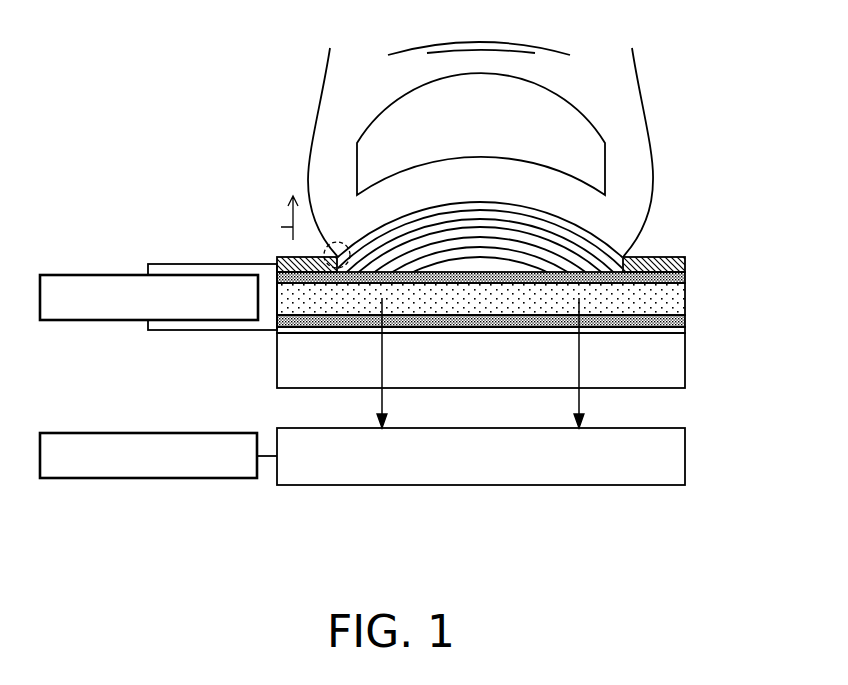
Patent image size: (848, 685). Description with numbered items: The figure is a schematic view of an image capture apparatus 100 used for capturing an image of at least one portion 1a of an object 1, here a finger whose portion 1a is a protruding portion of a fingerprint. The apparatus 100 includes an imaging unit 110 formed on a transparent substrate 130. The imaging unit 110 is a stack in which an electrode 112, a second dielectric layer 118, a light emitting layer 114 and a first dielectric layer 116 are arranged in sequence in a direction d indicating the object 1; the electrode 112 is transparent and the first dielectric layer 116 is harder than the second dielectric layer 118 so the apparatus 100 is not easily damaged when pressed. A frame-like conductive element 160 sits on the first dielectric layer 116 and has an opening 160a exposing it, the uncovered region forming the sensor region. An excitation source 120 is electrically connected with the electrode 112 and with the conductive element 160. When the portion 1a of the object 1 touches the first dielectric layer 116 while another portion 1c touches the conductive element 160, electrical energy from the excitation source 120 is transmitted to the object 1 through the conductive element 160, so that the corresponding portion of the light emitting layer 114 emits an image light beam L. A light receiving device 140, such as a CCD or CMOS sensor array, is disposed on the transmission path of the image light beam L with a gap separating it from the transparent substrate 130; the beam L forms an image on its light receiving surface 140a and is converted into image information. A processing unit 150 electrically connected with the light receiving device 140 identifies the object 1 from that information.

The object 1 is at (635, 112).
The portion of the object 1a is at (593, 231).
The another portion of the object 1c is at (337, 242).
The image capture apparatus 100 is at (756, 575).
The imaging unit 110 is at (542, 303).
The electrode 112 is at (512, 348).
The light emitting layer 114 is at (685, 301).
The first dielectric layer 116 is at (685, 277).
The second dielectric layer 118 is at (685, 320).
The excitation source 120 is at (83, 275).
The transparent substrate 130 is at (653, 370).
The light receiving device 140 is at (655, 467).
The light receiving surface 140a is at (653, 420).
The processing unit 150 is at (83, 433).
The conductive element 160 is at (277, 257).
The opening 160a is at (603, 253).
The image light beam L is at (579, 400).
The direction d is at (282, 218).